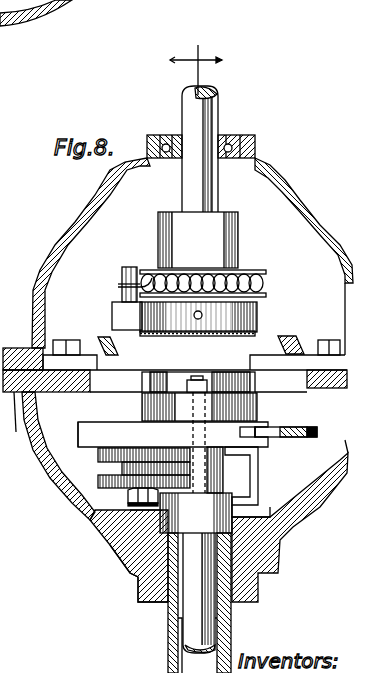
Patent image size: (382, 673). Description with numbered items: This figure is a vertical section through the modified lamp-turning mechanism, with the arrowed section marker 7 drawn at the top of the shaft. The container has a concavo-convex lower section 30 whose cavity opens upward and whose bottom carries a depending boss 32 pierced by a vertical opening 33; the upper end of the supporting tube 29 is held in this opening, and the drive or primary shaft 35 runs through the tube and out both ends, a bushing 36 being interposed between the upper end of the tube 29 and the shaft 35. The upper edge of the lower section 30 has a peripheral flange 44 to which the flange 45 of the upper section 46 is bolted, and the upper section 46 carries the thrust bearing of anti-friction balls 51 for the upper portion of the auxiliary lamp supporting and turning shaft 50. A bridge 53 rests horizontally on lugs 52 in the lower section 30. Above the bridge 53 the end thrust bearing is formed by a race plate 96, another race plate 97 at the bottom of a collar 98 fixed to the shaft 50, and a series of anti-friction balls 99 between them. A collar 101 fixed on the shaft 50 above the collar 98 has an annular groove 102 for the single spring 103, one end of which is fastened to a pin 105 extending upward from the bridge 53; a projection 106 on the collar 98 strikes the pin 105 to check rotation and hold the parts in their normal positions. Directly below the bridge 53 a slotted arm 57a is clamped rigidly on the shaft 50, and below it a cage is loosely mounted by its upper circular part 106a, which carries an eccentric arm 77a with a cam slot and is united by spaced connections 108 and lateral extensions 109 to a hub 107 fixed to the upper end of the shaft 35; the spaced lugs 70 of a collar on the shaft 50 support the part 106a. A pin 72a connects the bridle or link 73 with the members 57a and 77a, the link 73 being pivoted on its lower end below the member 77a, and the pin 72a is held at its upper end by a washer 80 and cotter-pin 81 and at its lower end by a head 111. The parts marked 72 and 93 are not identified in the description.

The section line 7 is at (198, 45).
The auxiliary lamp supporting and turning shaft 50 is at (214, 110).
The anti-friction balls 51 is at (166, 144).
The upper section of the housing 46 is at (60, 232).
The collar 101 is at (232, 240).
The annular groove 102 is at (152, 270).
The spring 103 is at (268, 287).
The screw or pin 105 is at (122, 282).
The projection 106 is at (112, 320).
The collar 98 is at (258, 312).
The anti-friction balls 99 is at (214, 337).
The race plate 97 is at (260, 329).
The nut 96 is at (258, 337).
The flange 45 is at (13, 346).
The cotter-pin 81 is at (252, 366).
The bridge 53 is at (198, 371).
The lugs 52 is at (76, 392).
The pin 72a is at (214, 373).
The washer 80 is at (208, 382).
The arm 57a is at (207, 408).
The bridle or link 73 is at (173, 442).
The eccentric arm 77a is at (115, 426).
The rod 93 is at (303, 428).
The upper circular part of the cage 106a is at (250, 434).
The spaced lugs 70 is at (100, 458).
The spaced apart connections 108 is at (262, 476).
The lateral extensions 109 is at (258, 500).
The nut 72 is at (146, 511).
The lower section of the container 30 is at (48, 481).
The peripheral flange 44 is at (25, 438).
The hub 107 is at (232, 520).
The head 111 is at (148, 542).
The depending boss 32 is at (130, 574).
The vertical opening 33 is at (156, 594).
The bushing 36 is at (170, 608).
The supporting tube 29 is at (172, 642).
The drive or primary shaft 35 is at (196, 638).